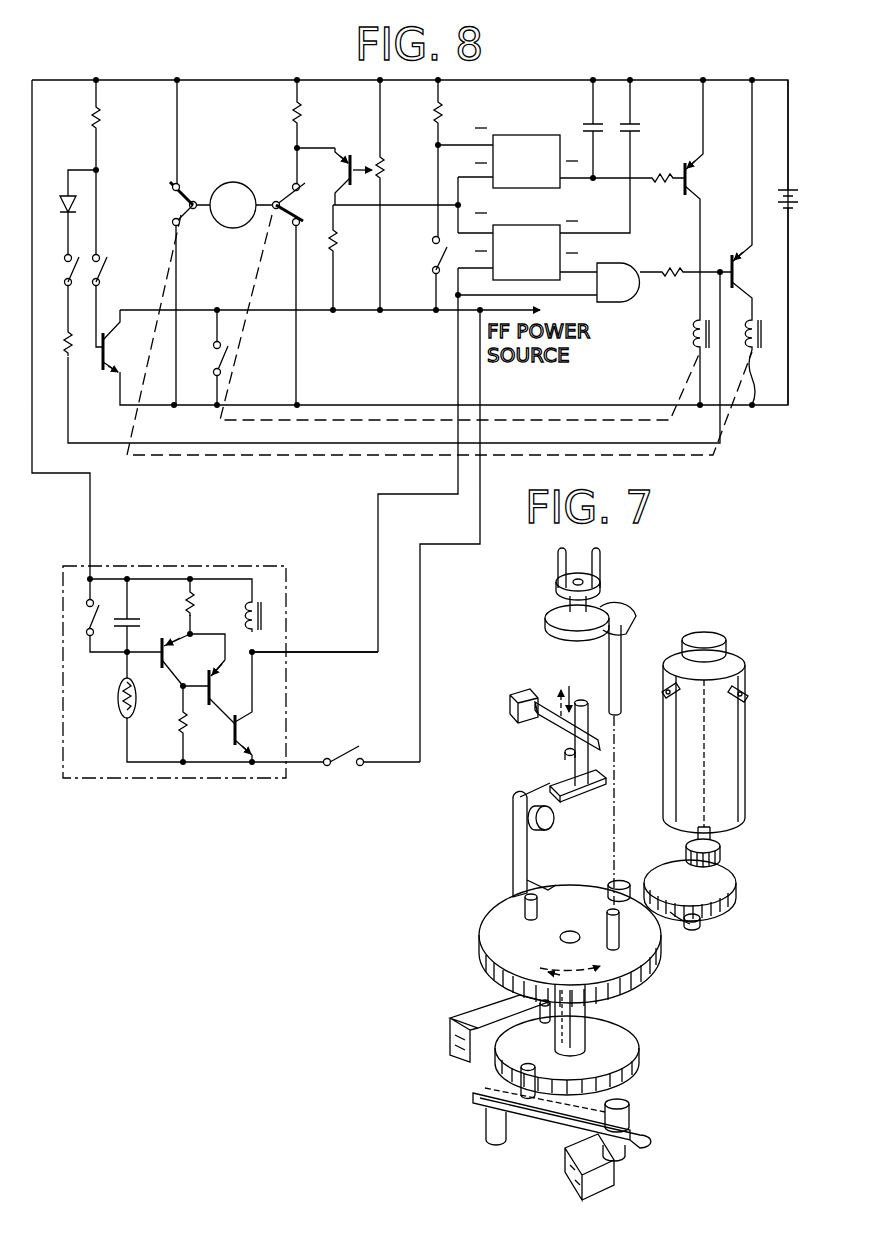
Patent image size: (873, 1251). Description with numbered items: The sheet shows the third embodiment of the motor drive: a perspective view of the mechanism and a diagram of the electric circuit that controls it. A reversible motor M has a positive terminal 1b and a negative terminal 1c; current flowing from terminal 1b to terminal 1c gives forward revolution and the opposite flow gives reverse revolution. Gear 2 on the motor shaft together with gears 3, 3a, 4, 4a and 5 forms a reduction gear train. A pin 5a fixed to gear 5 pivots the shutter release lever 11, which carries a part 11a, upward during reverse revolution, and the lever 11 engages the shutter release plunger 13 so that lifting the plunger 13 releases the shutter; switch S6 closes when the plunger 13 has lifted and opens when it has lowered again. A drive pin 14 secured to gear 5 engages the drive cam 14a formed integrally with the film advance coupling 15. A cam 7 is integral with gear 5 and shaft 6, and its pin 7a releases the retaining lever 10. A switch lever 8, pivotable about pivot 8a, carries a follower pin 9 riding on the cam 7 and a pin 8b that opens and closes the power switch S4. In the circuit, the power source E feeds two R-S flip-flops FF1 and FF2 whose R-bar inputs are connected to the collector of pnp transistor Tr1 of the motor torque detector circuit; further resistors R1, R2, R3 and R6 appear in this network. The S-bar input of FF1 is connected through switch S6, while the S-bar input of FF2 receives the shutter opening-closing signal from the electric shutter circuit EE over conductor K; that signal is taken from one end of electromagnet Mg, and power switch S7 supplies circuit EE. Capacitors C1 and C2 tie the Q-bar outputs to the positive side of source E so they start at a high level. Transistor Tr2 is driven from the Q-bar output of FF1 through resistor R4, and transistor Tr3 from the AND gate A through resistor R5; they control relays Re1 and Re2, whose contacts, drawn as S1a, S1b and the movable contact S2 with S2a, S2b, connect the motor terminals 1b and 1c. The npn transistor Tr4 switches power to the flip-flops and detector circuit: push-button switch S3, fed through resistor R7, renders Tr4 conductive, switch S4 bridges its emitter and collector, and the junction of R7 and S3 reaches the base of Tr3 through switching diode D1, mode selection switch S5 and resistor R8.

In FIG. 8, the resistor R7 is at (100, 118).
In FIG. 8, the resistor R1 is at (292, 116).
In FIG. 8, the resistor R6 is at (442, 112).
In FIG. 8, the variable resistor R2 is at (384, 168).
In FIG. 8, the pnp transistor Tr1 is at (348, 157).
In FIG. 8, the resistor R3 is at (337, 240).
In FIG. 8, the switching diode D1 is at (64, 204).
In FIG. 8, the S-C mode selection switch S5 is at (54, 280).
In FIG. 8, the push-button switch S3 is at (104, 268).
In FIG. 8, the fixed resistor R8 is at (63, 337).
In FIG. 8, the npn transistor Tr4 is at (100, 362).
In FIG. 8, the power switch S4 is at (203, 357).
In FIG. 7, the power switch S4 is at (612, 1172).
In FIG. 8, the reversible motor M is at (234, 205).
In FIG. 7, the reversible motor M is at (735, 740).
In FIG. 8, the movable contact of relay Re2 S2 is at (175, 205).
In FIG. 8, the switch contact S2b is at (172, 185).
In FIG. 8, the switch contact S2a is at (172, 224).
In FIG. 8, the negative terminal 1c is at (197, 188).
In FIG. 7, the negative terminal 1c is at (670, 698).
In FIG. 8, the positive terminal 1b is at (275, 185).
In FIG. 7, the positive terminal 1b is at (744, 696).
In FIG. 8, the switch contact S1b is at (292, 185).
In FIG. 8, the switch contact S1a is at (292, 225).
In FIG. 8, the switch S6 is at (432, 243).
In FIG. 7, the switch S6 is at (532, 728).
In FIG. 8, the R-S flip-flop circuit FF1 is at (525, 135).
In FIG. 8, the R-S flip-flop circuit FF2 is at (548, 225).
In FIG. 8, the capacitor C1 is at (585, 128).
In FIG. 8, the capacitor C2 is at (640, 128).
In FIG. 8, the fixed resistor R4 is at (660, 182).
In FIG. 8, the pnp transistor Tr2 is at (690, 180).
In FIG. 8, the relay Re1 is at (694, 336).
In FIG. 8, the AND gate circuit A is at (637, 295).
In FIG. 8, the fixed resistor R5 is at (675, 265).
In FIG. 8, the pnp transistor Tr3 is at (737, 258).
In FIG. 8, the relay Re2 is at (756, 381).
In FIG. 8, the electrical power source E is at (780, 202).
In FIG. 8, the electric shutter circuit EE is at (286, 660).
In FIG. 8, the electromagnet Mg is at (244, 612).
In FIG. 8, the conductor K is at (340, 652).
In FIG. 8, the power switch S7 is at (348, 768).
In FIG. 7, the film advance coupling 15 is at (600, 568).
In FIG. 7, the drive cam 14a is at (620, 612).
In FIG. 7, the gear 2 is at (722, 842).
In FIG. 7, the gear 3 is at (730, 878).
In FIG. 7, the gear 3a is at (700, 920).
In FIG. 7, the gear 4 is at (680, 925).
In FIG. 7, the gear 4a is at (619, 880).
In FIG. 7, the gear 5 is at (655, 975).
In FIG. 7, the pin 5a is at (523, 905).
In FIG. 7, the drive pin 14 is at (605, 924).
In FIG. 7, the shutter release lever 11 is at (540, 832).
In FIG. 7, the roller 11a is at (556, 818).
In FIG. 7, the shutter release plunger 13 is at (590, 752).
In FIG. 7, the retaining lever 10 is at (460, 1008).
In FIG. 7, the shaft 6 is at (586, 1036).
In FIG. 7, the cam 7 is at (640, 1046).
In FIG. 7, the pin 7a is at (543, 1022).
In FIG. 7, the pin 9 is at (538, 1078).
In FIG. 7, the switch lever 8 is at (640, 1130).
In FIG. 7, the pivot 8a is at (626, 1116).
In FIG. 7, the pin 8b is at (484, 1128).